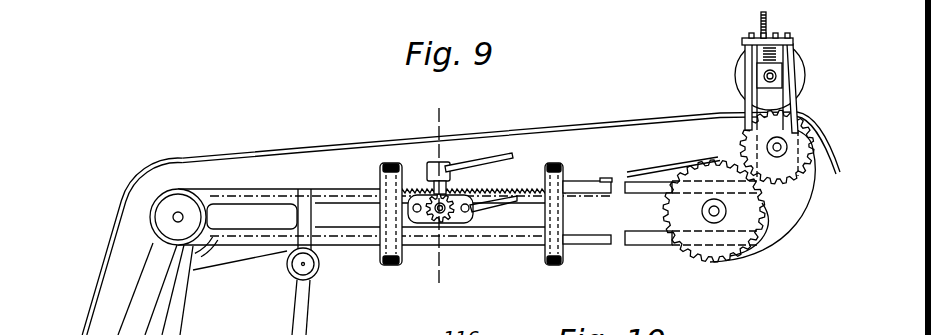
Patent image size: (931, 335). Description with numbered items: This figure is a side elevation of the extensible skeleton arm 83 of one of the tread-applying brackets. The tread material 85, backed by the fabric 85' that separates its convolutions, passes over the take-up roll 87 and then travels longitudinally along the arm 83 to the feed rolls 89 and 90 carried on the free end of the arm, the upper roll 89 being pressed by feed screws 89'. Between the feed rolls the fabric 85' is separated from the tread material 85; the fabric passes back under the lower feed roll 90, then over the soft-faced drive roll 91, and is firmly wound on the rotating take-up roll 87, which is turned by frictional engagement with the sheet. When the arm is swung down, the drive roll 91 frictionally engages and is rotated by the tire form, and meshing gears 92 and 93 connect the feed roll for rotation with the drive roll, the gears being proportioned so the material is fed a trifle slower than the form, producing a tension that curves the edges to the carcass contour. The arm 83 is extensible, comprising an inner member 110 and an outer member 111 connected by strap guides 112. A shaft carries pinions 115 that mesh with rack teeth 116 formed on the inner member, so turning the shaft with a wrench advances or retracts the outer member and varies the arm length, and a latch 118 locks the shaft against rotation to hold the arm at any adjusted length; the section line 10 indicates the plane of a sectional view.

The section line 10 is at (441, 197).
The skeleton arm 83 is at (246, 192).
The tread material 85 is at (427, 212).
The fabric 85' is at (442, 226).
The take-up roll 87 is at (172, 174).
The feed roll 89 is at (785, 83).
The feed screws 89' is at (788, 19).
The feed roll 90 is at (806, 134).
The soft-faced drive roll 91 is at (735, 252).
The gear 92 is at (690, 248).
The gear 93 is at (805, 175).
The inner member 110 is at (278, 248).
The outer member 111 is at (645, 237).
The strap guides 112 is at (380, 178).
The pinions 115 is at (463, 224).
The rack teeth 116 is at (517, 203).
The latch 118 is at (478, 162).